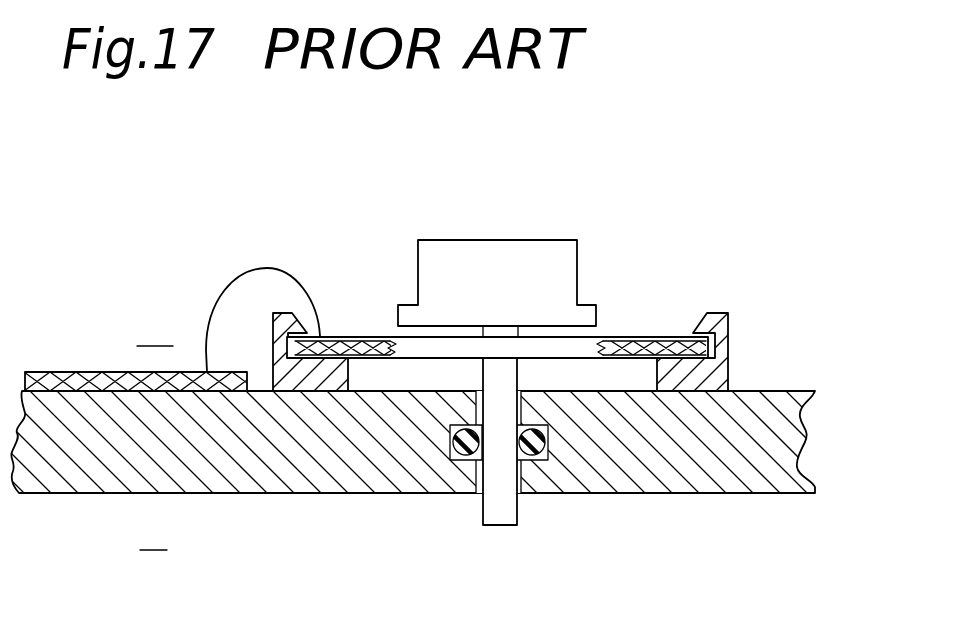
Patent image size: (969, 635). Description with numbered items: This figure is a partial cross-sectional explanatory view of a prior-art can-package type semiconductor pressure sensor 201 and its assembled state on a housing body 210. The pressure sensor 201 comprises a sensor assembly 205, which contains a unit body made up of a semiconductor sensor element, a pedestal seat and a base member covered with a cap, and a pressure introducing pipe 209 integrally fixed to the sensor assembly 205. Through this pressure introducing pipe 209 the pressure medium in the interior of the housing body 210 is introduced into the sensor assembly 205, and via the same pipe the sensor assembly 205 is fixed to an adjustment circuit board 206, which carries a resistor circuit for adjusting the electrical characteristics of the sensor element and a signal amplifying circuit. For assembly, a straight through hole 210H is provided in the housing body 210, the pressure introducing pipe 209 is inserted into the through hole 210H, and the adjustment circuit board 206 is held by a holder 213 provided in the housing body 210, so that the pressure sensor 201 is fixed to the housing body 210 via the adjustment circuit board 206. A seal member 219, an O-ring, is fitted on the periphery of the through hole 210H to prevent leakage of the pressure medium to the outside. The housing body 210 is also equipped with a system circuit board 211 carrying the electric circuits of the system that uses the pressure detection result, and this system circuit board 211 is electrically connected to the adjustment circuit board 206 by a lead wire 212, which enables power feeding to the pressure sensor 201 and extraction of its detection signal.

The pressure sensor 201 is at (504, 252).
The sensor assembly 205 is at (418, 251).
The adjustment circuit board 206 is at (646, 337).
The pressure introducing pipe 209 is at (517, 512).
The housing body 210 is at (93, 493).
The through hole 210H is at (486, 492).
The system circuit board 211 is at (97, 370).
The lead wire 212 is at (233, 280).
The holder 213 is at (346, 360).
The seal member 219 is at (548, 446).